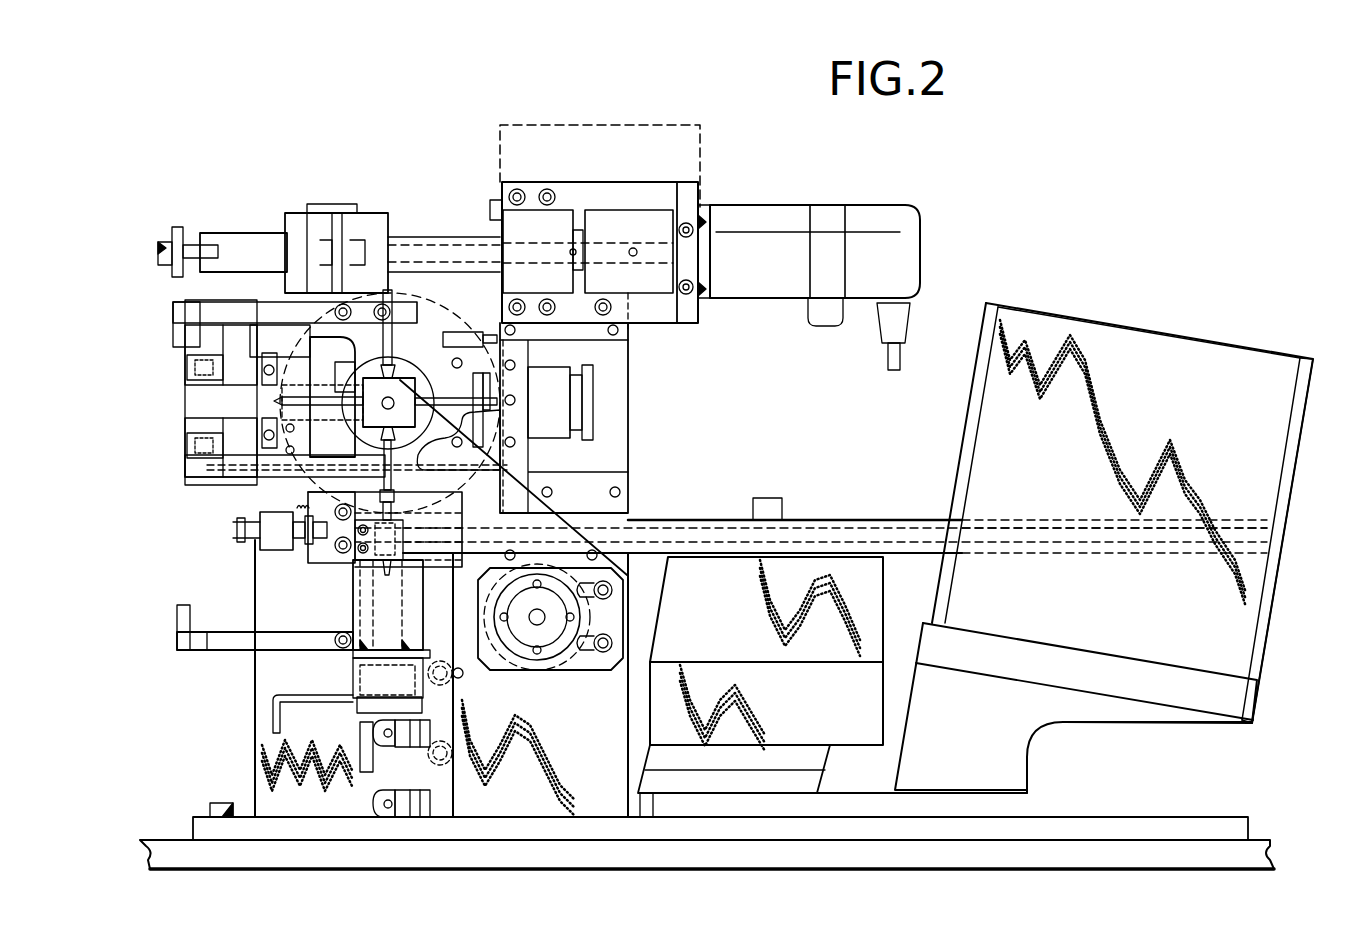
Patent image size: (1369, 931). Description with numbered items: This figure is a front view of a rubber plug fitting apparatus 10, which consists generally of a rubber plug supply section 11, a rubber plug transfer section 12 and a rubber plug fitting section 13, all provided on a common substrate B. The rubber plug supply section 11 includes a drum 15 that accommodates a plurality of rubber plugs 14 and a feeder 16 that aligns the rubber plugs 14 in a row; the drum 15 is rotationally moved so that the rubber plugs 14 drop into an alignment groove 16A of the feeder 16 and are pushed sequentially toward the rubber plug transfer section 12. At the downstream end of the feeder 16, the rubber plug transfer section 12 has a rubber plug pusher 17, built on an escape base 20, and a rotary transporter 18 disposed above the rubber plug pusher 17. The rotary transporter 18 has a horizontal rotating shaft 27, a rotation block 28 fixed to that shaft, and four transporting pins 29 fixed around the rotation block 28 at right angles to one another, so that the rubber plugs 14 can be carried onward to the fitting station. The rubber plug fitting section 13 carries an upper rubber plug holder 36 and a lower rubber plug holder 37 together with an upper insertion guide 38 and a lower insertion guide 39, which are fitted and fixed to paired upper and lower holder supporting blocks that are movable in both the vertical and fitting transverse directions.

The rubber plug fitting apparatus 10 is at (1048, 250).
The rubber plug supply section 11 is at (1070, 318).
The rubber plug transfer section 12 is at (300, 578).
The rubber plug fitting section 13 is at (182, 360).
The rubber plug 14 is at (323, 472).
The drum 15 is at (1308, 396).
The feeder 16 is at (850, 530).
The alignment groove 16A is at (866, 540).
The rubber plug pusher 17 is at (352, 593).
The rotary transporter 18 is at (310, 430).
The escape base 20 is at (380, 600).
The rotating shaft 27 is at (322, 408).
The rotation block 28 is at (410, 385).
The transporting pin 29 is at (458, 340).
The upper rubber plug holder 36 is at (190, 370).
The lower rubber plug holder 37 is at (190, 442).
The upper insertion guide 38 is at (270, 348).
The lower insertion guide 39 is at (300, 402).
The substrate B is at (1165, 825).